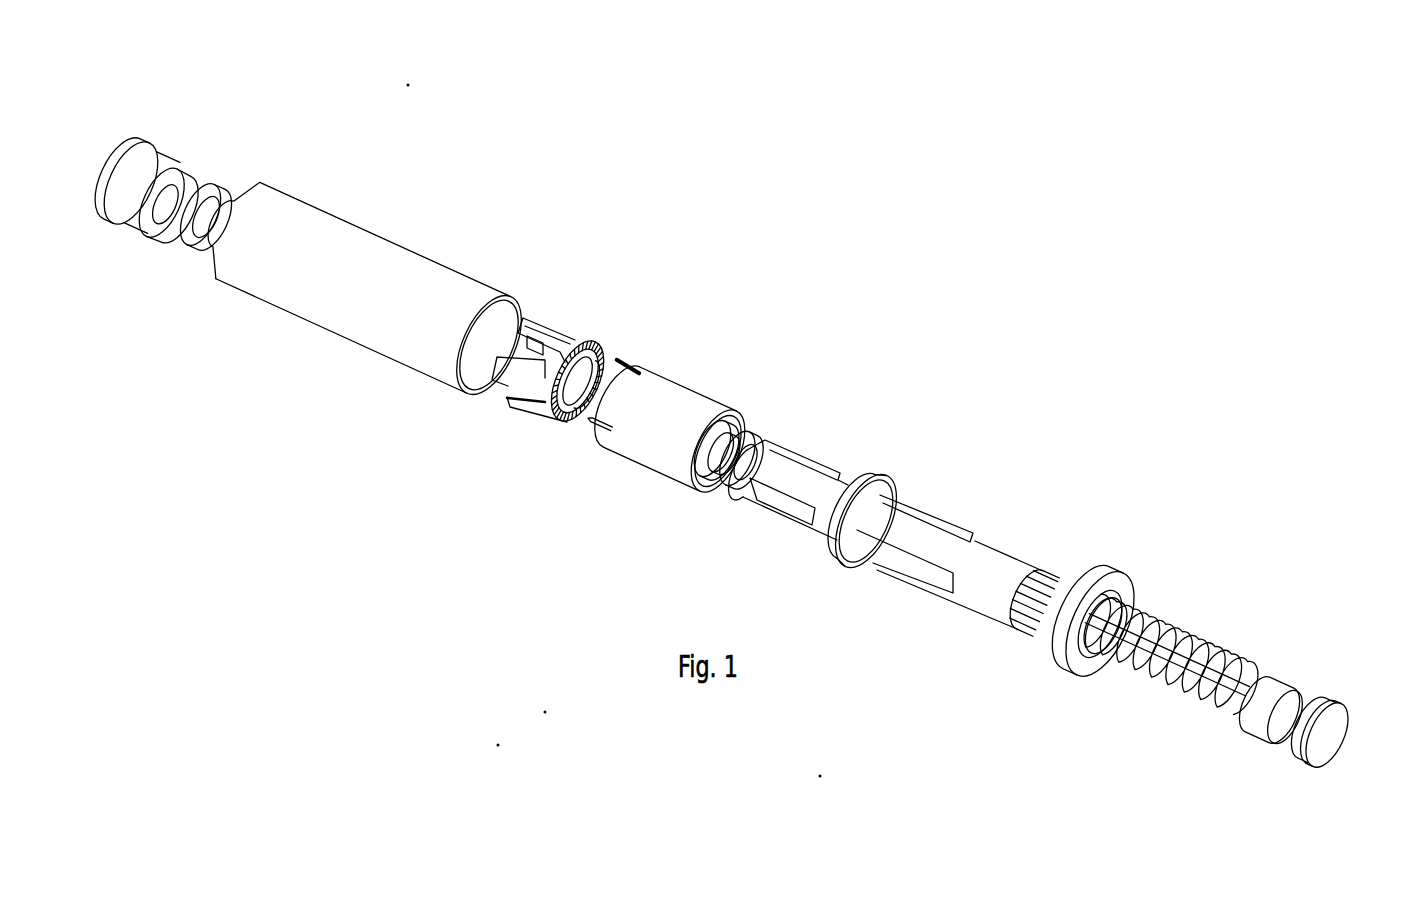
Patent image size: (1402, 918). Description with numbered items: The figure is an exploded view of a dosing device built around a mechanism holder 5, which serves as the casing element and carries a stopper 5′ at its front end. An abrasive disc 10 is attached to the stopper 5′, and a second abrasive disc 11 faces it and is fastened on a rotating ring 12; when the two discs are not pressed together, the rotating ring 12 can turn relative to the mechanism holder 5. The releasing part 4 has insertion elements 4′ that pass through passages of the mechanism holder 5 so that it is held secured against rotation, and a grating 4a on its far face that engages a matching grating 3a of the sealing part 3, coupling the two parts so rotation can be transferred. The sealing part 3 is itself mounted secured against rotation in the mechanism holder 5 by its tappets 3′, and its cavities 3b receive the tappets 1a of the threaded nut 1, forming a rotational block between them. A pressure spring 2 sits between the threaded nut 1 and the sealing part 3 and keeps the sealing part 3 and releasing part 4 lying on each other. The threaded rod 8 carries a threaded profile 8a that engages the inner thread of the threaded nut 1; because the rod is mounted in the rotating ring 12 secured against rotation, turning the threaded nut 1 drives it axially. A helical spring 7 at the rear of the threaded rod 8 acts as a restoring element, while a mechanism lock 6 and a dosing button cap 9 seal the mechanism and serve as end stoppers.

The threaded nut 1 is at (897, 528).
The tappets 1a is at (908, 572).
The pressure spring 2 is at (748, 440).
The sealing part 3 is at (665, 397).
The grating 3a is at (620, 362).
The cavities 3b is at (696, 464).
The tappets 3′ is at (592, 423).
The releasing part 4 is at (565, 340).
The grating 4a is at (604, 358).
The insertion elements 4′ is at (498, 382).
The mechanism holder 5 is at (355, 263).
The stopper 5′ is at (217, 258).
The mechanism lock 6 is at (1077, 583).
The helical spring 7 is at (1165, 645).
The threaded rod 8 is at (1270, 693).
The threaded profile 8a is at (1198, 662).
The dosing button cap 9 is at (1333, 720).
The abrasive disc 10 is at (217, 193).
The abrasive disc 11 is at (193, 180).
The rotating ring 12 is at (135, 172).